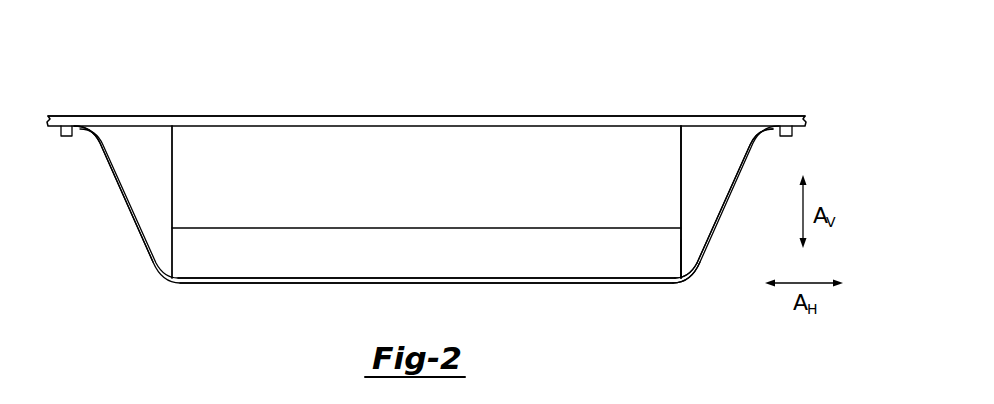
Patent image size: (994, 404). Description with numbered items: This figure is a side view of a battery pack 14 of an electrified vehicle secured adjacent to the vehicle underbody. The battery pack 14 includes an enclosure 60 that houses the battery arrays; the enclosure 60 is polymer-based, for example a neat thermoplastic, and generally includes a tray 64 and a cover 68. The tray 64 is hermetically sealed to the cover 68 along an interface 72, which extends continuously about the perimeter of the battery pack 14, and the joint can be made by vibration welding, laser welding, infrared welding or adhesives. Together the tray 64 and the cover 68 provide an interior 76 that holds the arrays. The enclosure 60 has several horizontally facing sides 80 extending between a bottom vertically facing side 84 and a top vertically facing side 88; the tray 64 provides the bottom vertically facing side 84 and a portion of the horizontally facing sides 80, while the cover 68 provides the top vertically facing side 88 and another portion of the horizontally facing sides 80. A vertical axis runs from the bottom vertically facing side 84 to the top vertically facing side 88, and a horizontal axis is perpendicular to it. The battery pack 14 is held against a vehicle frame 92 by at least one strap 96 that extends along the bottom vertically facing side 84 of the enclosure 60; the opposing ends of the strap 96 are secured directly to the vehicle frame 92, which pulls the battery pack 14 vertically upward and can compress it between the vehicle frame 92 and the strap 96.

The battery pack 14 is at (692, 136).
The enclosure 60 is at (681, 168).
The tray 64 is at (681, 257).
The cover 68 is at (681, 208).
The interface 72 is at (568, 228).
The interior 76 is at (658, 156).
The horizontally facing sides 80 is at (172, 208).
The bottom vertically facing side 84 is at (218, 280).
The top vertically facing side 88 is at (268, 124).
The vehicle frame 92 is at (127, 115).
The strap 96 is at (104, 163).